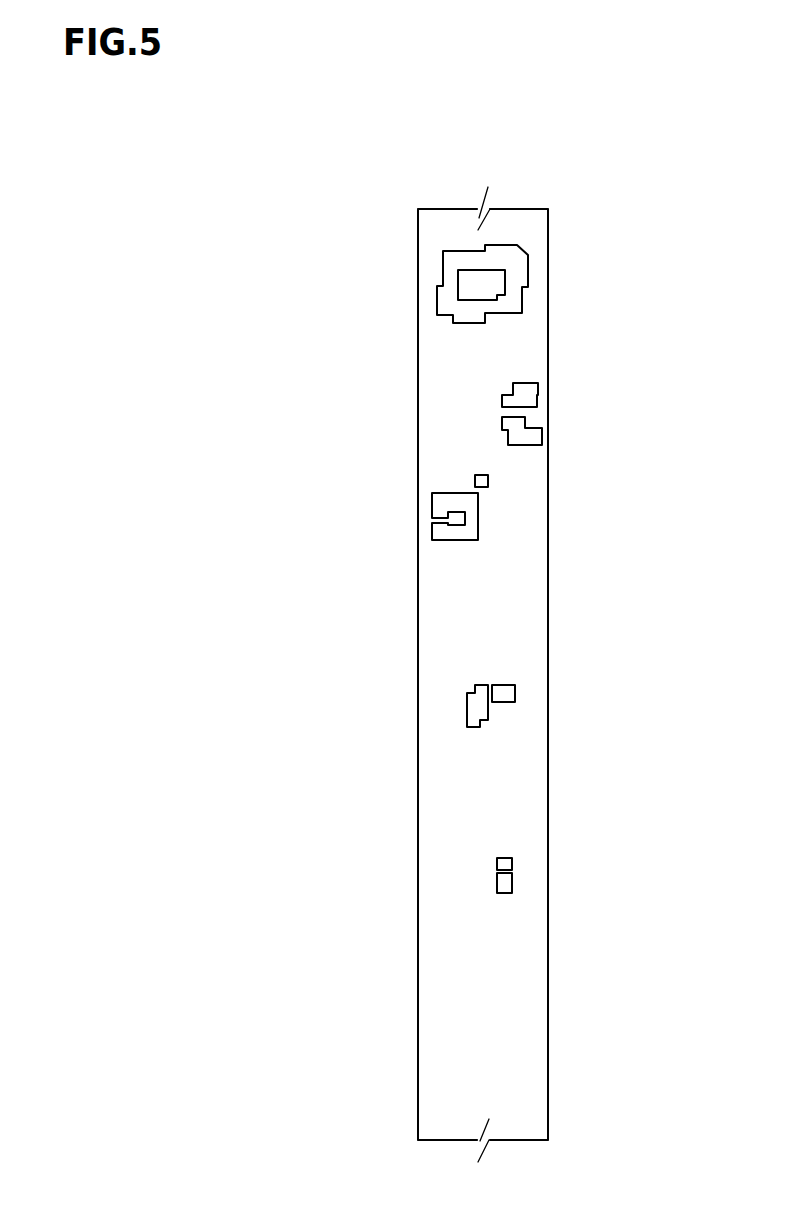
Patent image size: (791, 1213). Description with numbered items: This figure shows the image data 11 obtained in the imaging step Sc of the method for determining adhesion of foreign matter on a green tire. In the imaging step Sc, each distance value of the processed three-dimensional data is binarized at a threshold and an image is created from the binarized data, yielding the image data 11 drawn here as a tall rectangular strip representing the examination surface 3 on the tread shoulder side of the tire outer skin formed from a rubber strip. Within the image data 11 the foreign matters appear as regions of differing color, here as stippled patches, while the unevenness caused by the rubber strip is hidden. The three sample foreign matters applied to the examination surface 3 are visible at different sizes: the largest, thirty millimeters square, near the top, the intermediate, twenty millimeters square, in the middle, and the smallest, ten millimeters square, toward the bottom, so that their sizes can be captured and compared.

The examination surface 3 is at (522, 542).
The image data 11 is at (597, 267).
The imaging step Sc is at (623, 323).